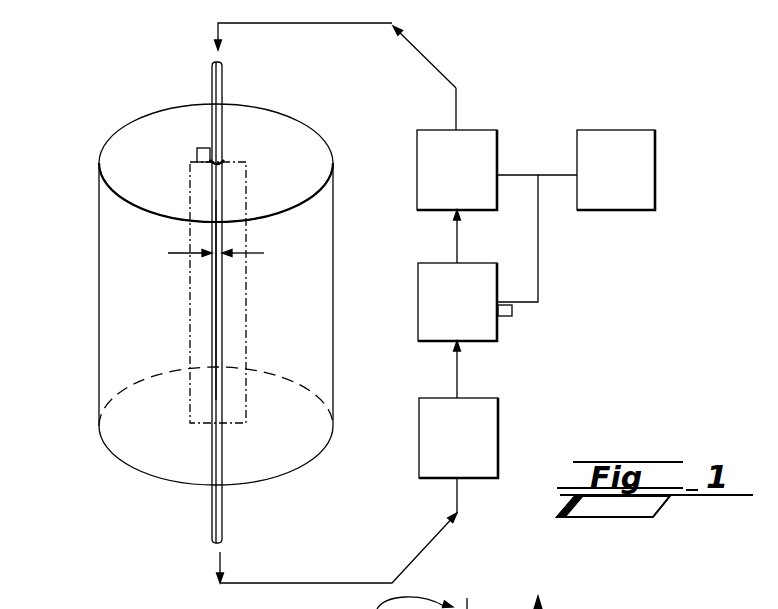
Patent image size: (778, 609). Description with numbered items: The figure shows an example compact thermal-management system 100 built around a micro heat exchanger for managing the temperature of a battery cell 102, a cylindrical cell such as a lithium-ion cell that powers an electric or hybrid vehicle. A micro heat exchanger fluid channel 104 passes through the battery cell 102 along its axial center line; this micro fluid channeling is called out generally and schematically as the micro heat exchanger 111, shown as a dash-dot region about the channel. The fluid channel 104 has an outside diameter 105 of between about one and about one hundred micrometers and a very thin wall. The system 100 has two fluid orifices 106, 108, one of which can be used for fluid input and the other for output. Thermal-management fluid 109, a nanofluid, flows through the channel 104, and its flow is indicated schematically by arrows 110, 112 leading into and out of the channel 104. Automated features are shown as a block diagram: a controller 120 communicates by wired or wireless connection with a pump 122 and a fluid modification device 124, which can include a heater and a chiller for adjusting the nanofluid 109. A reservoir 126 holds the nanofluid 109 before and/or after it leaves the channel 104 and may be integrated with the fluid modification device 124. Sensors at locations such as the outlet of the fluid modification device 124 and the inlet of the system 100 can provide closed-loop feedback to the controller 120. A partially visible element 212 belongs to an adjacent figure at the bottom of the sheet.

The thermal-management system 100 is at (305, 517).
The battery cell 102 is at (297, 457).
The fluid channel 104 is at (212, 287).
The outside diameter 105 is at (237, 253).
The fluid orifice 106 is at (222, 162).
The fluid orifice 108 is at (172, 483).
The thermal-management fluid 109 is at (218, 343).
The fluid flow arrow 110 is at (200, 30).
The micro fluid channeling 111 is at (247, 328).
The fluid flow arrow 112 is at (208, 571).
The controller 120 is at (636, 183).
The pump 122 is at (477, 183).
The fluid modification device 124 is at (477, 316).
The reservoir 126 is at (477, 451).
The element of second figure 212 is at (547, 607).